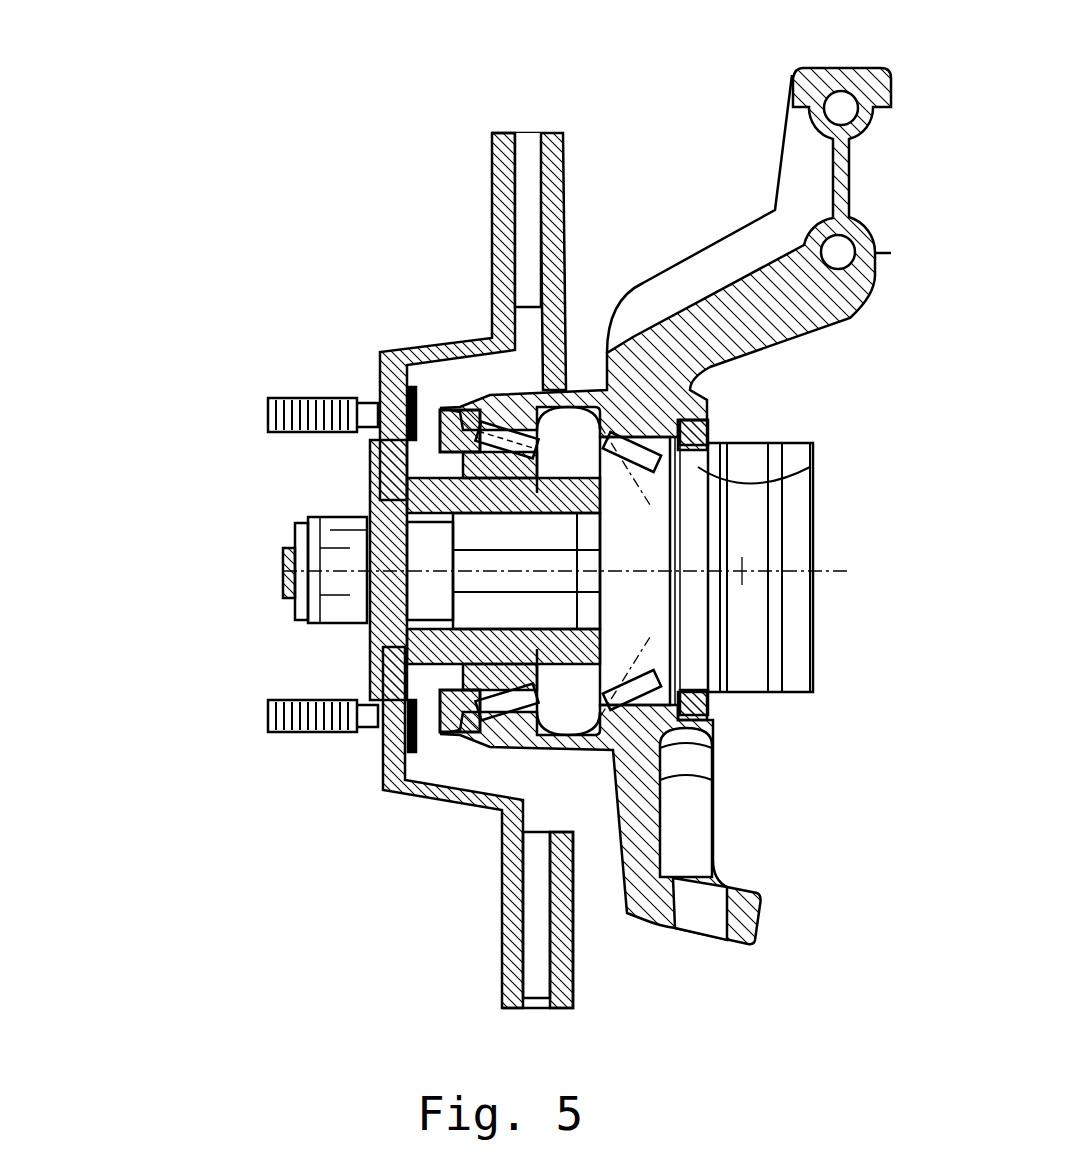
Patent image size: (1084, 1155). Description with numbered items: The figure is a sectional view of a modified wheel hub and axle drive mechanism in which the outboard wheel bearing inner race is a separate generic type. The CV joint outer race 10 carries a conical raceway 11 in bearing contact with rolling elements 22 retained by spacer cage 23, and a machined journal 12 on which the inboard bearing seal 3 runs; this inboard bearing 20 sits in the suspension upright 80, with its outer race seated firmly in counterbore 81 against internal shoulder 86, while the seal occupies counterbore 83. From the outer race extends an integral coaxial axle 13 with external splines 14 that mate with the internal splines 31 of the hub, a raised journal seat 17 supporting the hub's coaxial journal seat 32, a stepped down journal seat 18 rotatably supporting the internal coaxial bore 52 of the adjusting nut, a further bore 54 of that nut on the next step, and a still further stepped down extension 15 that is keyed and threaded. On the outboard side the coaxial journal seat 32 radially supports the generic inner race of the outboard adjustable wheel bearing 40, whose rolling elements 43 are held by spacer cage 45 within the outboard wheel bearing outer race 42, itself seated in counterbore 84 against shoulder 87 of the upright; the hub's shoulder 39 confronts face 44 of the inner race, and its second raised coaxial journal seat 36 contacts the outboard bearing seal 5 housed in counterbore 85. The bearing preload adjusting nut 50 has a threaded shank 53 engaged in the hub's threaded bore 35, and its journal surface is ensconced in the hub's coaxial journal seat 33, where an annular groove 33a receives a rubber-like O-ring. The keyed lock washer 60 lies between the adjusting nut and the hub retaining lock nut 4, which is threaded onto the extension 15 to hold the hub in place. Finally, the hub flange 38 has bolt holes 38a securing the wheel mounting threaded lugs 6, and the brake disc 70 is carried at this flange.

The brake disc 70 is at (552, 128).
The suspension upright 80 is at (780, 155).
The inboard bearing seal 3 is at (703, 430).
The counterbore 83 is at (745, 365).
The counterbore 81 is at (700, 830).
The inboard bearing 20 is at (700, 782).
The spacer cage 23 is at (713, 745).
The internal splines 31 is at (497, 515).
The coaxial journal seat 32 is at (605, 612).
The rolling elements 22 is at (655, 665).
The raised coaxial journal seat 17 is at (594, 537).
The conical raceway 11 is at (632, 472).
The external splines 14 is at (462, 566).
The internal coaxial bore 52 is at (430, 571).
The stepped down coaxial journal seat 18 is at (429, 597).
The hub retaining lock nut 4 is at (330, 530).
The coaxial outwardly extending axle 13 is at (277, 560).
The stepped down extension 15 is at (287, 605).
The internal coaxial bore 54 is at (347, 632).
The bearing preload adjusting nut 50 is at (382, 645).
The annular groove 33a is at (387, 678).
The threaded shank 53 is at (348, 500).
The keyed lock washer 60 is at (350, 505).
The coaxial journal seat 33 is at (417, 483).
The wheel mounting threaded lugs 6 is at (267, 400).
The threaded bore 35 is at (392, 757).
The hub flange 38 is at (400, 350).
The bolt holes 38a is at (378, 355).
The counterbore 85 is at (468, 395).
The outboard bearing seal 5 is at (424, 420).
The outboard wheel bearing outer race 42 is at (537, 450).
The spacer cage 45 is at (570, 461).
The outboard adjustable wheel bearing 40 is at (533, 571).
The shoulder 39 is at (537, 692).
The second raised coaxial journal seat 36 is at (433, 664).
The internal shoulder 86 is at (590, 658).
The shoulder 87 is at (573, 707).
The face 44 is at (460, 718).
The rolling elements 43 is at (476, 715).
The counterbore 84 is at (520, 720).
The CV joint outer race 10 is at (820, 533).
The machined journal 12 is at (815, 478).